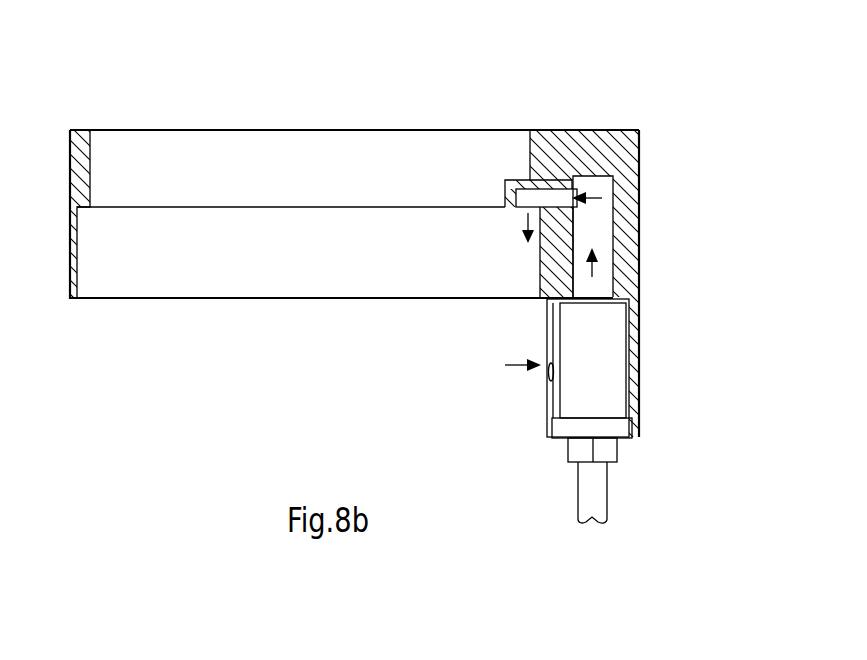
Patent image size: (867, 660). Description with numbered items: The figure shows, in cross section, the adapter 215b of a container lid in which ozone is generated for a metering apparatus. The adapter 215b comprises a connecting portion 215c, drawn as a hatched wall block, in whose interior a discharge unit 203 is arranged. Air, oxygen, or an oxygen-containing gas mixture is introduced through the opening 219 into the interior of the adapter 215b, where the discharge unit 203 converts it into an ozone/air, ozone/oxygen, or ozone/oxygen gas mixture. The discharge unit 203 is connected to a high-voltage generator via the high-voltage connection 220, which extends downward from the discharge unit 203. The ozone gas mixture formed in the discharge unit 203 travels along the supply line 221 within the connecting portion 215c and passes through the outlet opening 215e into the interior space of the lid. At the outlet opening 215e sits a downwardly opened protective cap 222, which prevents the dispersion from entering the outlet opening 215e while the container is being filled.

The adapter 215b is at (209, 98).
The connecting portion 215c is at (633, 160).
The outlet opening 215e is at (548, 189).
The protective cap 222 is at (505, 192).
The supply line 221 is at (595, 228).
The discharge unit 203 is at (607, 368).
The opening 219 is at (550, 368).
The high-voltage connection 220 is at (597, 492).